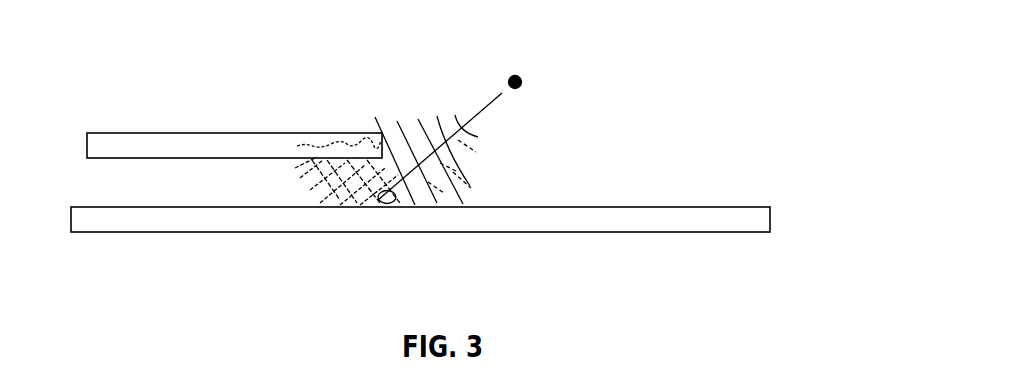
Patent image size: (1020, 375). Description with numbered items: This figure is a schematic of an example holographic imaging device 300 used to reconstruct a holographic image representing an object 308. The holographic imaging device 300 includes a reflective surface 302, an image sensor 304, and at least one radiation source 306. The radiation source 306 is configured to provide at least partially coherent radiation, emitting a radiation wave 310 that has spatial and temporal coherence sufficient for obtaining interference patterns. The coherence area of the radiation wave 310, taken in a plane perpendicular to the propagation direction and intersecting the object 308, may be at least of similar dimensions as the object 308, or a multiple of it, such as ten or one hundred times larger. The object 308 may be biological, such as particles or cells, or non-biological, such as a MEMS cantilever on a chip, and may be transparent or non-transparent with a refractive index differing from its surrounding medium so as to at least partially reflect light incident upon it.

The holographic imaging device 300 is at (622, 98).
The reflective surface 302 is at (445, 231).
The image sensor 304 is at (298, 134).
The radiation source 306 is at (508, 78).
The object 308 is at (400, 203).
The radiation wave 310 is at (463, 148).